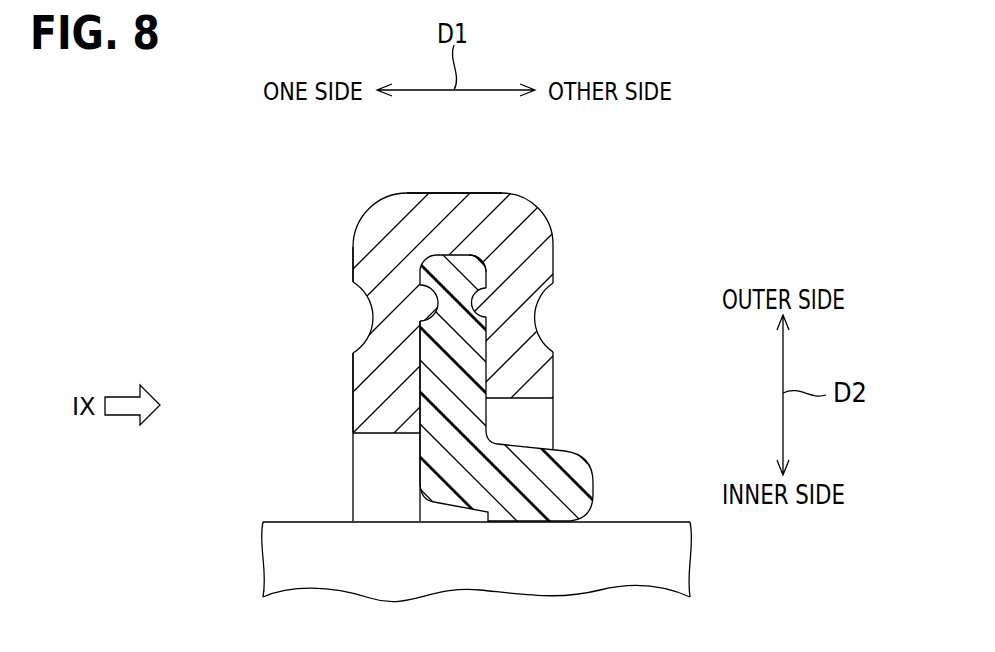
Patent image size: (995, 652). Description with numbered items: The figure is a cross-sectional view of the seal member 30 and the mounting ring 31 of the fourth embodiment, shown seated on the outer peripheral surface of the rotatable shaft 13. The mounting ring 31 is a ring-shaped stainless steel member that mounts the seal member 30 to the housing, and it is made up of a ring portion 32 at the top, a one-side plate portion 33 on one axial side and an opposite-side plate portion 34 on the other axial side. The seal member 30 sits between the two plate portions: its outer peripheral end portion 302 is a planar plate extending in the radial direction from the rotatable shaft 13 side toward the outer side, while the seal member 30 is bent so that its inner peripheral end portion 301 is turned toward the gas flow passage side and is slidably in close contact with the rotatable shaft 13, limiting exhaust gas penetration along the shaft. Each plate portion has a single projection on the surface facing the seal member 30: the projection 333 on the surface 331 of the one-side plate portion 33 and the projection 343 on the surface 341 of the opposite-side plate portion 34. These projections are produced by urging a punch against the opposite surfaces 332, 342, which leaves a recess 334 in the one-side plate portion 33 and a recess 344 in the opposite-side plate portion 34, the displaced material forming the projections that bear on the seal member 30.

The rotatable shaft 13 is at (280, 557).
The seal member 30 is at (465, 372).
The inner peripheral end portion 301 is at (527, 480).
The outer peripheral end portion 302 is at (427, 266).
The mounting ring 31 is at (497, 207).
The ring portion 32 is at (465, 226).
The one-side plate portion 33 is at (335, 384).
The surface of one-side plate portion 331 is at (418, 410).
The surface of one-side plate portion 332 is at (353, 368).
The projection 333 is at (422, 292).
The recess 334 is at (372, 317).
The opposite-side plate portion 34 is at (569, 342).
The surface of opposite-side plate portion 341 is at (490, 382).
The surface of opposite-side plate portion 342 is at (535, 290).
The projection 343 is at (492, 276).
The recess 344 is at (531, 319).